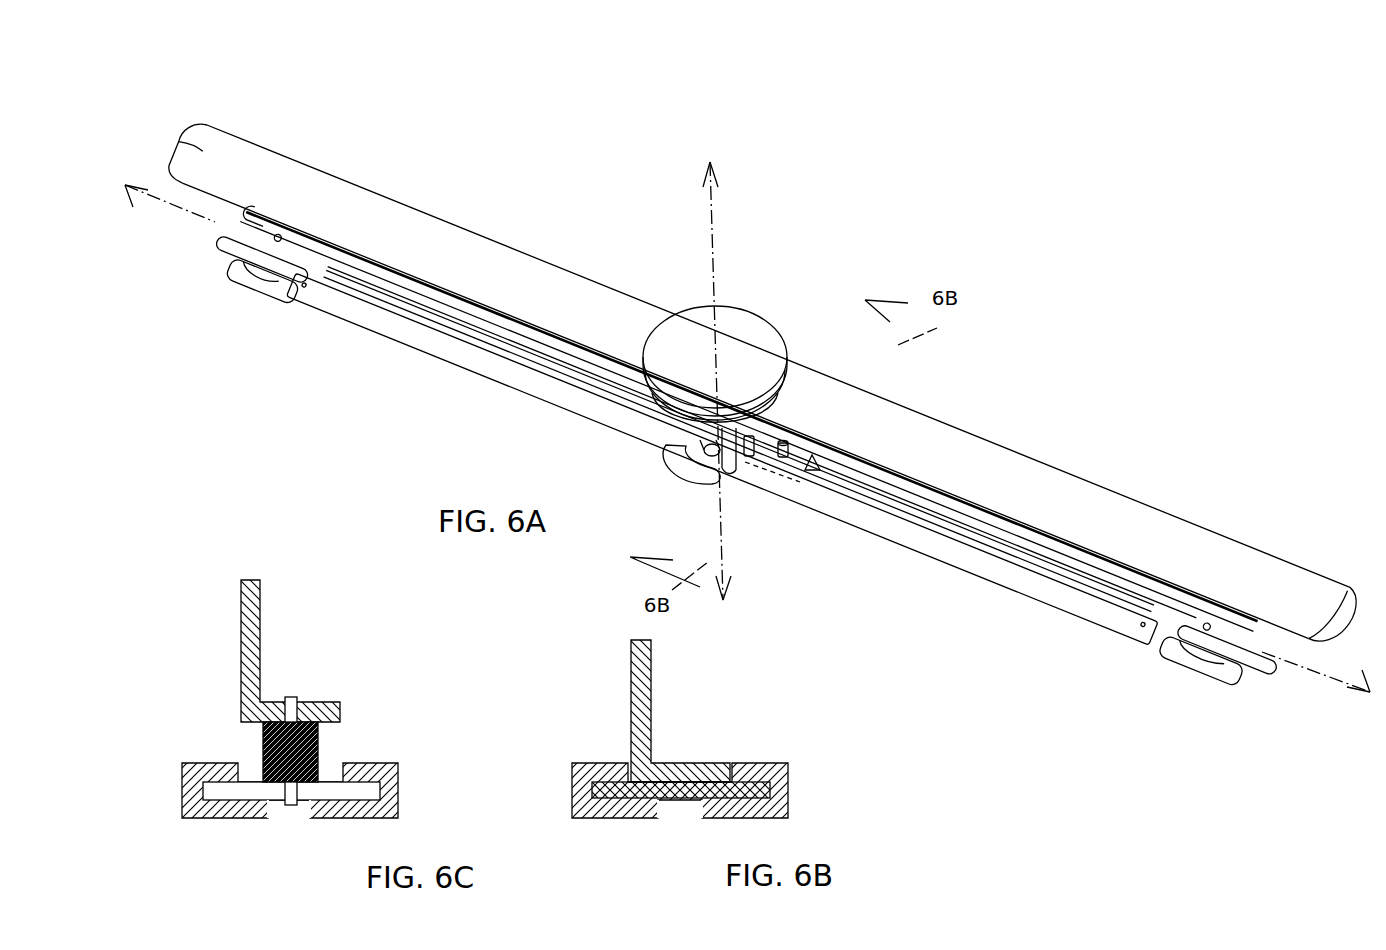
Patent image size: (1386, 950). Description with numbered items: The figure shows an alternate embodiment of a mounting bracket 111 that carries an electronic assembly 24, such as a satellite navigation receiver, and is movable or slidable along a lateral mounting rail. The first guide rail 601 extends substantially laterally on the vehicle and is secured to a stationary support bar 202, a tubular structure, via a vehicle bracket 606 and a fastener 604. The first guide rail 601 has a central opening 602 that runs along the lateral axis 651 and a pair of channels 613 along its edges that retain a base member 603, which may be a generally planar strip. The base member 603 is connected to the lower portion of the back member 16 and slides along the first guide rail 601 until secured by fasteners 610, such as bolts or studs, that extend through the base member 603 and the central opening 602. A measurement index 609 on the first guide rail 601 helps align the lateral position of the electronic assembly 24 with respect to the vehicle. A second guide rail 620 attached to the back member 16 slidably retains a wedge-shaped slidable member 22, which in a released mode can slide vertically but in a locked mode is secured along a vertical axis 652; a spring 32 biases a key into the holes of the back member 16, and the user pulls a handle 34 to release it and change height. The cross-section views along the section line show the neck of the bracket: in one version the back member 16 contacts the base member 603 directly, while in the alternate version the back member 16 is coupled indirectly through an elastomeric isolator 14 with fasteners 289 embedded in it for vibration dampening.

In FIG. 6A, the stationary support bar 202 is at (764, 384).
In FIG. 6A, the fastener 604 is at (742, 432).
In FIG. 6A, the electronic assembly 24 is at (696, 320).
In FIG. 6A, the vertical axis 652 is at (718, 218).
In FIG. 6A, the back member 16 is at (750, 416).
In FIG. 6B, the back member 16 is at (703, 762).
In FIG. 6C, the back member 16 is at (330, 702).
In FIG. 6A, the fasteners 610 is at (790, 446).
In FIG. 6A, the first guide rail 601 is at (746, 427).
In FIG. 6A, the central opening 602 is at (761, 444).
In FIG. 6A, the channels 613 is at (747, 455).
In FIG. 6B, the channels 613 is at (592, 762).
In FIG. 6C, the channels 613 is at (203, 762).
In FIG. 6A, the mounting bracket 111 is at (334, 473).
In FIG. 6A, the spring 32 is at (700, 444).
In FIG. 6A, the handle 34 is at (680, 485).
In FIG. 6A, the slidable member 22 is at (742, 472).
In FIG. 6A, the second guide rail 620 is at (745, 470).
In FIG. 6B, the base member 603 is at (680, 805).
In FIG. 6C, the base member 603 is at (232, 790).
In FIG. 6A, the measurement index 609 is at (722, 459).
In FIG. 6A, the vehicle bracket 606 is at (735, 473).
In FIG. 6A, the lateral axis 651 is at (150, 205).
In FIG. 6C, the fasteners 289 is at (287, 697).
In FIG. 6C, the isolator 14 is at (318, 750).